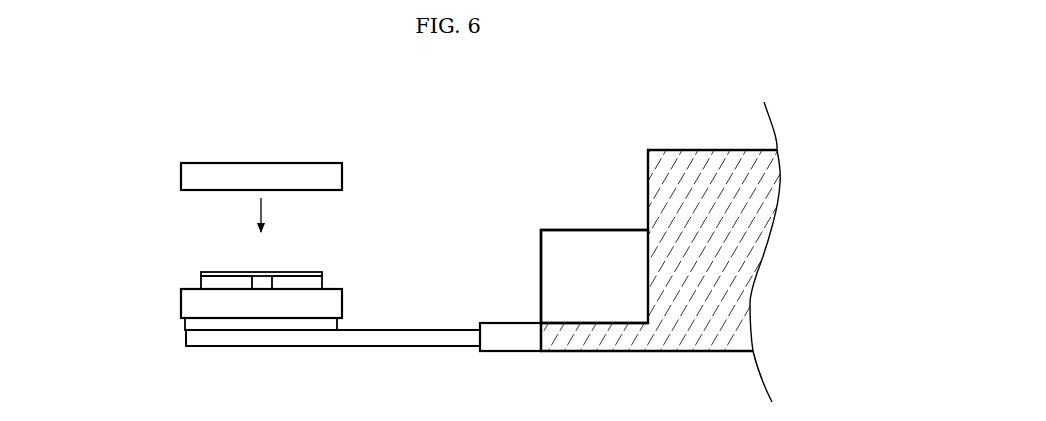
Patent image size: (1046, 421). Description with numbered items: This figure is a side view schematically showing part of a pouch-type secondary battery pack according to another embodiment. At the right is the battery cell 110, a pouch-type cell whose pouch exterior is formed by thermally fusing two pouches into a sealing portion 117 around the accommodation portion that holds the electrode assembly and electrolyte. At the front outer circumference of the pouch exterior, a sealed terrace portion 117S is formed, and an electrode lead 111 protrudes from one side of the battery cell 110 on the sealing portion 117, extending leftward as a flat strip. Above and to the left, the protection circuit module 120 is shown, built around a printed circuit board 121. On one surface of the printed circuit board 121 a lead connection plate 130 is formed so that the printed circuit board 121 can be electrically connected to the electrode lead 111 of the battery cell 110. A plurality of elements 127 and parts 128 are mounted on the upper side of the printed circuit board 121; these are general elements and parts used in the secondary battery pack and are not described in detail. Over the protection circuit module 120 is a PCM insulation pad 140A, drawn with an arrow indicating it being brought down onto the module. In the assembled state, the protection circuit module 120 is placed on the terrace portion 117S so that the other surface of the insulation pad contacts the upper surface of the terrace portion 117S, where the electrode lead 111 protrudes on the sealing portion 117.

The battery cell 110 is at (681, 131).
The electrode lead 111 is at (412, 330).
The sealing portion 117 is at (524, 306).
The terrace portion 117S is at (588, 323).
The protection circuit module 120 is at (168, 284).
The printed circuit board 121 is at (181, 303).
The elements 127 is at (322, 283).
The parts 128 is at (322, 274).
The lead connection plate 130 is at (185, 323).
The PCM insulation pad 140A is at (307, 163).